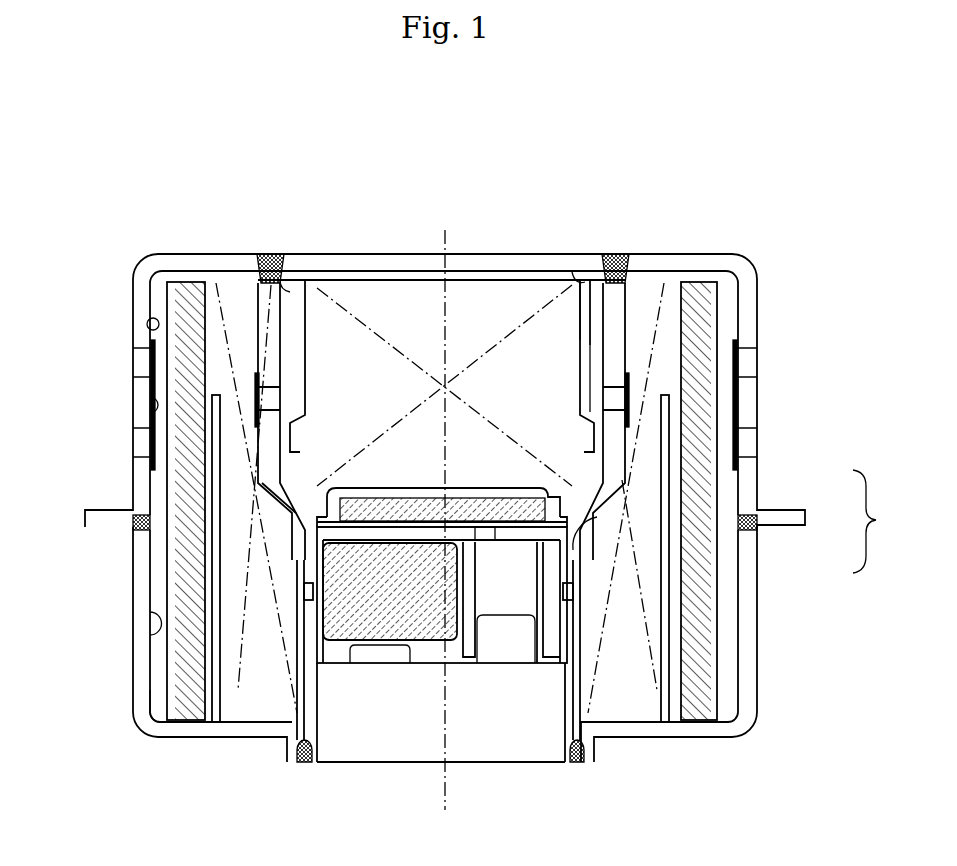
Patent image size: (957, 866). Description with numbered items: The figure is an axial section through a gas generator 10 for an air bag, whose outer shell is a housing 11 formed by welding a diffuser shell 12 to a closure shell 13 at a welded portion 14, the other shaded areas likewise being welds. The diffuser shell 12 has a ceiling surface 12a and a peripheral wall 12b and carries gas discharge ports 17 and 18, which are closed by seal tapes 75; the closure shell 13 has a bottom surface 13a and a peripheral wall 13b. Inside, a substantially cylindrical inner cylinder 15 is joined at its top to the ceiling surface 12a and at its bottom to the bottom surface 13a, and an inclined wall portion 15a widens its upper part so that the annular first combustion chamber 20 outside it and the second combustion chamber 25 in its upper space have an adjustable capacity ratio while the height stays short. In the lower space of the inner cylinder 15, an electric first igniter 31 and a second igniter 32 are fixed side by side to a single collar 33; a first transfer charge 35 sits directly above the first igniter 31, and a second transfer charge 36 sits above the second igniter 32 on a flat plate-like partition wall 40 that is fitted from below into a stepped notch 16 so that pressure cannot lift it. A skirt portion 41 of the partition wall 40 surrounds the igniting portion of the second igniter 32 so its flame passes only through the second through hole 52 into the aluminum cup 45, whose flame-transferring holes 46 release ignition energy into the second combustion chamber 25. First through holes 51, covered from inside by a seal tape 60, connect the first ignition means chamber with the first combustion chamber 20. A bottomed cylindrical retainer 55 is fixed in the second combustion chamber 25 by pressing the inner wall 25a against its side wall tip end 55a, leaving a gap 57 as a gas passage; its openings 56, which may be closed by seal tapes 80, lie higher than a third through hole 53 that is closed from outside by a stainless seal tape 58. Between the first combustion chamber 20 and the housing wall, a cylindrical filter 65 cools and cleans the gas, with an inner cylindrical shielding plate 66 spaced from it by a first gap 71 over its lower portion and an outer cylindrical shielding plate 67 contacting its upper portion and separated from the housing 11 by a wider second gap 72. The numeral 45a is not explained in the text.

The gas generator 10 is at (461, 465).
The housing 11 is at (881, 521).
The diffuser shell 12 is at (753, 489).
The ceiling surface 12a is at (572, 272).
The diffuser shell peripheral wall 12b is at (150, 323).
The closure shell 13 is at (752, 551).
The bottom surface 13a is at (620, 710).
The closure shell peripheral wall 13b is at (158, 618).
The welded portion 14 is at (135, 531).
The inner cylinder 15 is at (643, 282).
The inclined wall portion 15a is at (256, 498).
The stepped notch 16 is at (626, 498).
The gas discharge port 17 is at (750, 363).
The gas discharge port 18 is at (750, 437).
The first combustion chamber 20 is at (234, 668).
The second combustion chamber 25 is at (522, 392).
The inner wall 25a is at (293, 280).
The first igniter 31 is at (370, 655).
The second igniter 32 is at (512, 690).
The collar 33 is at (388, 762).
The first transfer charge 35 is at (373, 606).
The second transfer charge 36 is at (375, 500).
The flat plate-like partition wall 40 is at (474, 533).
The skirt portion 41 is at (540, 590).
The aluminum cup 45 is at (533, 490).
The holder bracket step 45a is at (322, 512).
The flame-transferring holes 46 is at (445, 525).
The first through hole 51 is at (302, 598).
The second through hole 52 is at (508, 527).
The third through hole 53 is at (211, 285).
The retainer 55 is at (413, 280).
The side wall tip end 55a is at (280, 428).
The openings 56 is at (325, 282).
The gap 57 is at (627, 283).
The stainless seal tape 58 is at (590, 348).
The seal tape 60 is at (557, 603).
The cylindrical filter 65 is at (703, 623).
The inner cylindrical shielding plate 66 is at (645, 692).
The outer cylindrical shielding plate 67 is at (167, 298).
The first gap 71 is at (212, 712).
The second gap 72 is at (157, 697).
The seal tapes 75 is at (152, 418).
The seal tapes 80 is at (575, 305).